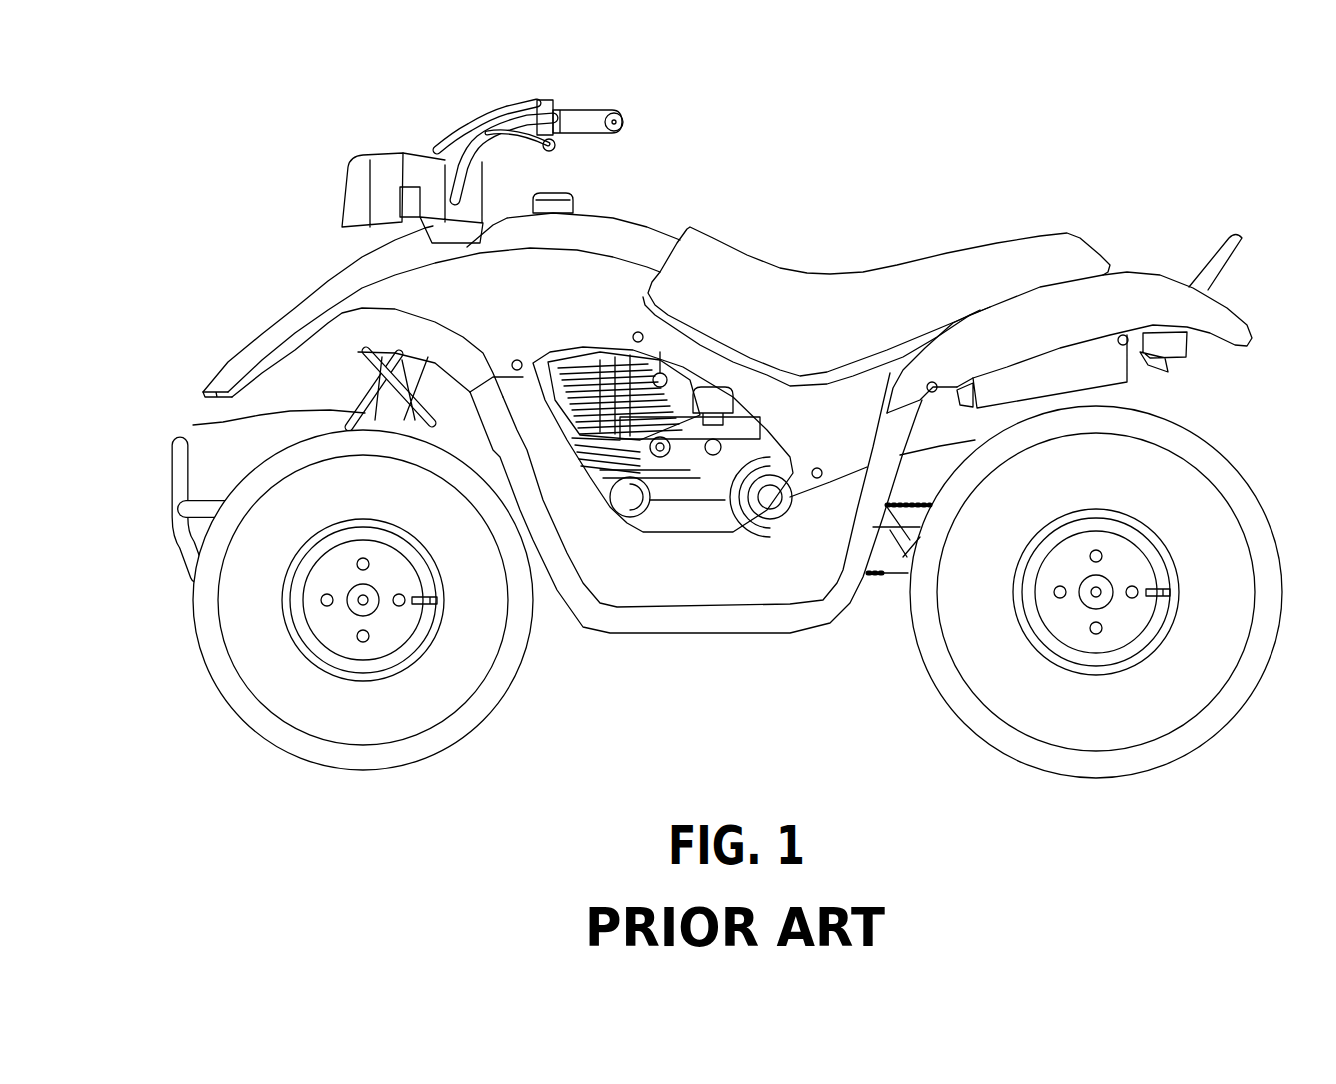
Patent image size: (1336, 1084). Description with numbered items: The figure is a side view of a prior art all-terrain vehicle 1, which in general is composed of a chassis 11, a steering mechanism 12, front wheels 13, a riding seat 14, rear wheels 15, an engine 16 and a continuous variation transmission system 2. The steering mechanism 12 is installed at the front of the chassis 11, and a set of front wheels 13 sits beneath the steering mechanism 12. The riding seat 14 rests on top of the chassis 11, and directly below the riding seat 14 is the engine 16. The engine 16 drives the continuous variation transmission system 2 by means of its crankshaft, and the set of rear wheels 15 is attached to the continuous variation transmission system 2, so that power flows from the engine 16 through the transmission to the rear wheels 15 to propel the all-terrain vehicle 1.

The all-terrain vehicle 1 is at (271, 103).
The continuous variation transmission system 2 is at (697, 510).
The chassis 11 is at (193, 425).
The steering mechanism 12 is at (533, 101).
The front wheels 13 is at (218, 660).
The riding seat 14 is at (879, 287).
The rear wheels 15 is at (975, 677).
The engine 16 is at (640, 296).